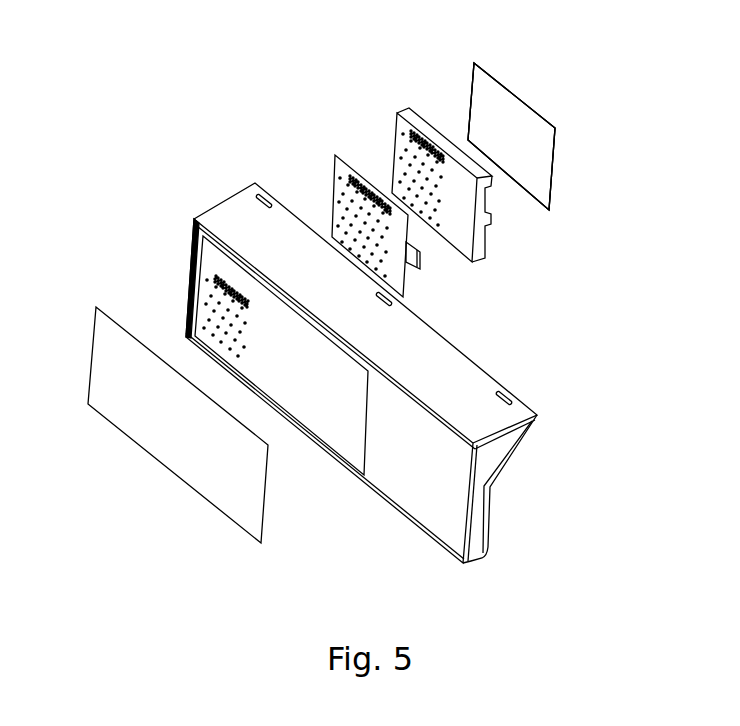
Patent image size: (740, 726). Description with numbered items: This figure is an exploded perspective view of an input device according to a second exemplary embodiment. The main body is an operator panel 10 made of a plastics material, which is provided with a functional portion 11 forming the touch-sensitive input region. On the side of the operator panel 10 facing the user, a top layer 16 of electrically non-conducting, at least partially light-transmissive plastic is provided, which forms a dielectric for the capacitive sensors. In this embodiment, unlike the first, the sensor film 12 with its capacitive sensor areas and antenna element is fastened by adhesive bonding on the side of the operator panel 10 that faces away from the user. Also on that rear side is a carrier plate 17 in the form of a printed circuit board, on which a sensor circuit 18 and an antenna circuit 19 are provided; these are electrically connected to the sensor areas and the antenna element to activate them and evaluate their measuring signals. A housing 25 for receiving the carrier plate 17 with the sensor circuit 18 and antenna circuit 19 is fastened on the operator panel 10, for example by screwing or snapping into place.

The operator panel 10 is at (490, 450).
The functional portion 11 is at (203, 260).
The sensor film 12 is at (343, 152).
The top layer 16 is at (107, 345).
The carrier plate 17 is at (555, 164).
The sensor circuit 18 is at (483, 87).
The antenna circuit 19 is at (537, 128).
The housing 25 is at (410, 123).